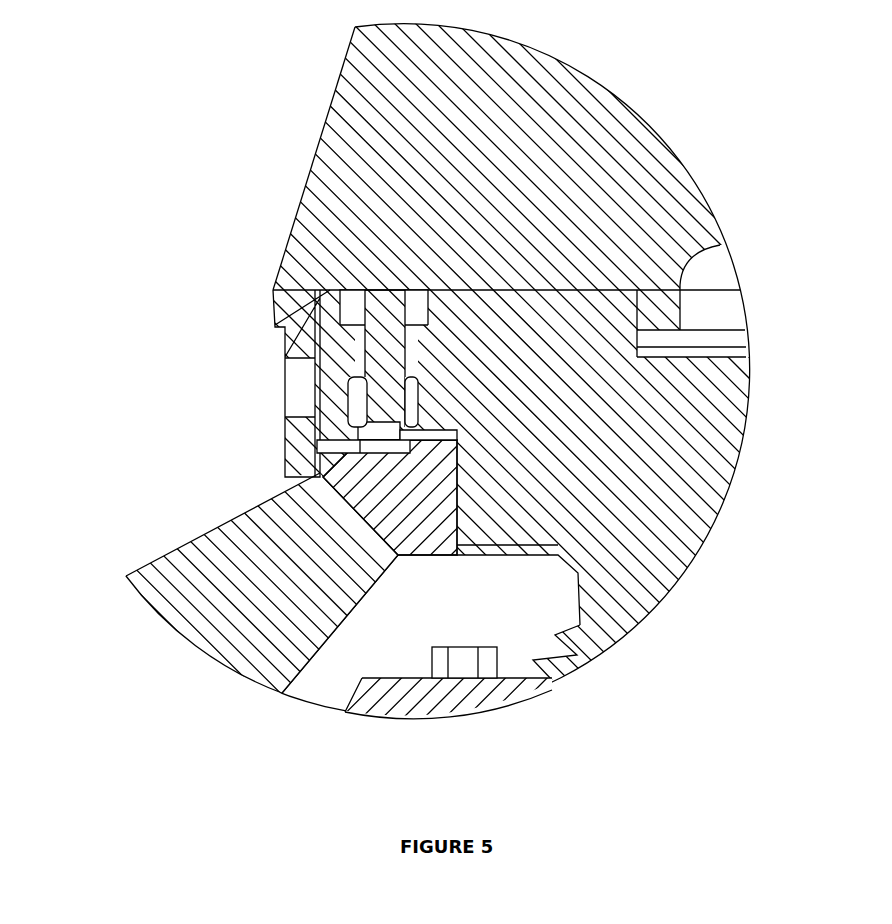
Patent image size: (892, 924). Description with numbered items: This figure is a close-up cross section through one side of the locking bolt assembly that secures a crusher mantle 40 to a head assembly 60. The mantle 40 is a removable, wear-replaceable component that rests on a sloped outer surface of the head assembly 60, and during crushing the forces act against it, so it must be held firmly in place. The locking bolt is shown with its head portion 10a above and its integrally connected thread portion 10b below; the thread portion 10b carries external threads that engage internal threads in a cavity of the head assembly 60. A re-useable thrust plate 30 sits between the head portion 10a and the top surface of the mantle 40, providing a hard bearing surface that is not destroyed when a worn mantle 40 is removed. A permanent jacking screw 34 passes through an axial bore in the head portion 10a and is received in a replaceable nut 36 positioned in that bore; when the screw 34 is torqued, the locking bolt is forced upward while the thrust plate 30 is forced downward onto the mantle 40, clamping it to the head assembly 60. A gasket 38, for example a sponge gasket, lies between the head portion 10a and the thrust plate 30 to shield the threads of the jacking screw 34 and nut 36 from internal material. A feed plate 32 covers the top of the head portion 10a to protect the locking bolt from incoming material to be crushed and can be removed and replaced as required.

The feed plate 32 is at (540, 95).
The permanent jacking screw 34 is at (390, 320).
The head portion 10a is at (337, 345).
The nut 36 is at (352, 398).
The re-useable thrust plate 30 is at (372, 475).
The gasket 38 is at (447, 433).
The mantle 40 is at (232, 570).
The thread portion 10b is at (585, 645).
The head assembly 60 is at (477, 697).